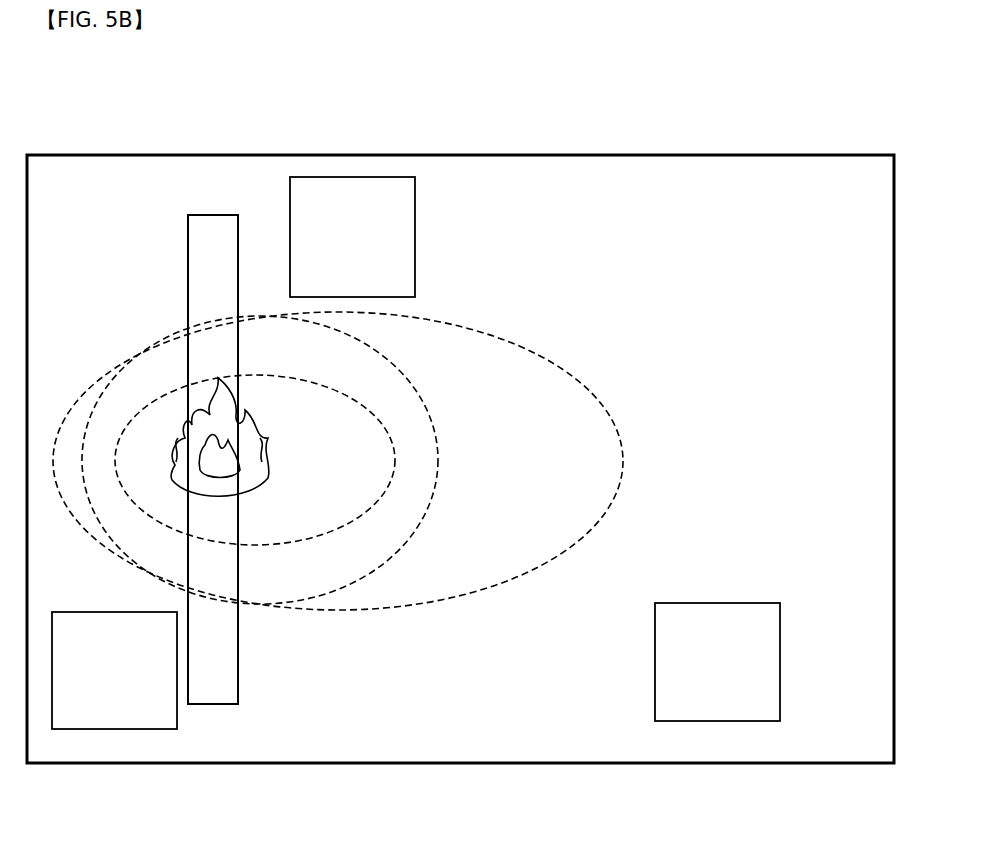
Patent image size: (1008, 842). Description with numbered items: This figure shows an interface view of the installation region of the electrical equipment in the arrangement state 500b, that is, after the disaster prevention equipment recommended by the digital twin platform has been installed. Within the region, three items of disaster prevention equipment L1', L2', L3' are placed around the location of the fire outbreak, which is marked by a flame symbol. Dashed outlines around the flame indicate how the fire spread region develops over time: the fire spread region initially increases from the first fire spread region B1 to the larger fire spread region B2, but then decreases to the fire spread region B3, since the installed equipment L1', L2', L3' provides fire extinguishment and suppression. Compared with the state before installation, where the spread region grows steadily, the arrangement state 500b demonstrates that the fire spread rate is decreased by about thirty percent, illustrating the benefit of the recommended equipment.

The arrangement state 500b is at (623, 121).
The disaster prevention equipment L1' is at (114, 670).
The disaster prevention equipment L2' is at (352, 237).
The disaster prevention equipment L3' is at (717, 662).
The fire spread region B1 is at (255, 460).
The fire spread region B2 is at (338, 461).
The fire spread region B3 is at (260, 460).